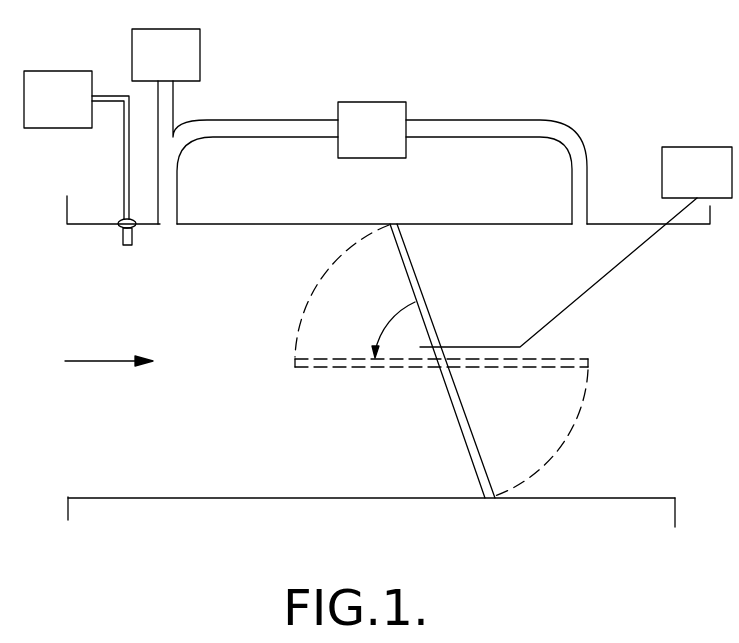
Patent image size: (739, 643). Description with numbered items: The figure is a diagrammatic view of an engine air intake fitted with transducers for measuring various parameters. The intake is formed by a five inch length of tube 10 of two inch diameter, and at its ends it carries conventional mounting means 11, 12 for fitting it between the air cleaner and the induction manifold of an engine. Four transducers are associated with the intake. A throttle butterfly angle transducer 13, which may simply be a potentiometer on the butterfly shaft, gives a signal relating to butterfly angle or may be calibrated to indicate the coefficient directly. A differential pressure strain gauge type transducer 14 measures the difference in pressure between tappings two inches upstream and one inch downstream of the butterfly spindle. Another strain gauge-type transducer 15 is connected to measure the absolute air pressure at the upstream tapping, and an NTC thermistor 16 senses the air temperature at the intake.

The tube 10 is at (407, 498).
The mounting means 11 is at (673, 520).
The mounting means 12 is at (70, 503).
The throttle butterfly angle transducer 13 is at (692, 147).
The differential pressure transducer 14 is at (407, 117).
The absolute pressure transducer 15 is at (200, 52).
The thermistor 16 is at (63, 70).